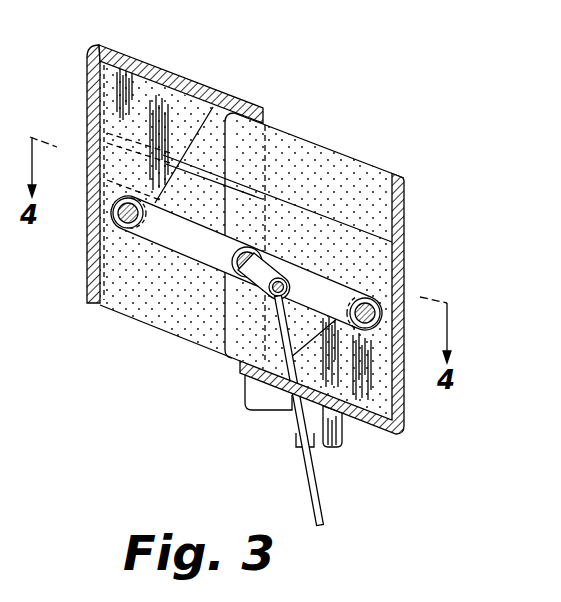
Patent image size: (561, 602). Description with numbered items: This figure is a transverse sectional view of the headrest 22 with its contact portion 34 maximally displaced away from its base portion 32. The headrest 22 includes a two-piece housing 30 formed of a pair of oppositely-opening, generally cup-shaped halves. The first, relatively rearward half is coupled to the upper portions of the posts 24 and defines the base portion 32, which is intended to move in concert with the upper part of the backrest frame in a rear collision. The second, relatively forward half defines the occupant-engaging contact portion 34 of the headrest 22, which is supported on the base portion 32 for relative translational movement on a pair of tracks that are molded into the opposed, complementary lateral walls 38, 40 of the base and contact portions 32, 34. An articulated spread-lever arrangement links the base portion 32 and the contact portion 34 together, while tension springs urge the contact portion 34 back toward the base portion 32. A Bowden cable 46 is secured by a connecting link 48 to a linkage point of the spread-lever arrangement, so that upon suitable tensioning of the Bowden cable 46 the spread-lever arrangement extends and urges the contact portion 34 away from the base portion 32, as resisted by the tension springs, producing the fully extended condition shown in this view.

The headrest 22 is at (250, 272).
The posts 24 is at (340, 437).
The two-piece housing 30 is at (87, 270).
The base portion 32 is at (405, 210).
The contact portion 34 is at (122, 52).
The lateral wall 38 is at (350, 175).
The lateral wall 40 is at (168, 313).
The Bowden cable 46 is at (297, 433).
The connecting link 48 is at (269, 292).